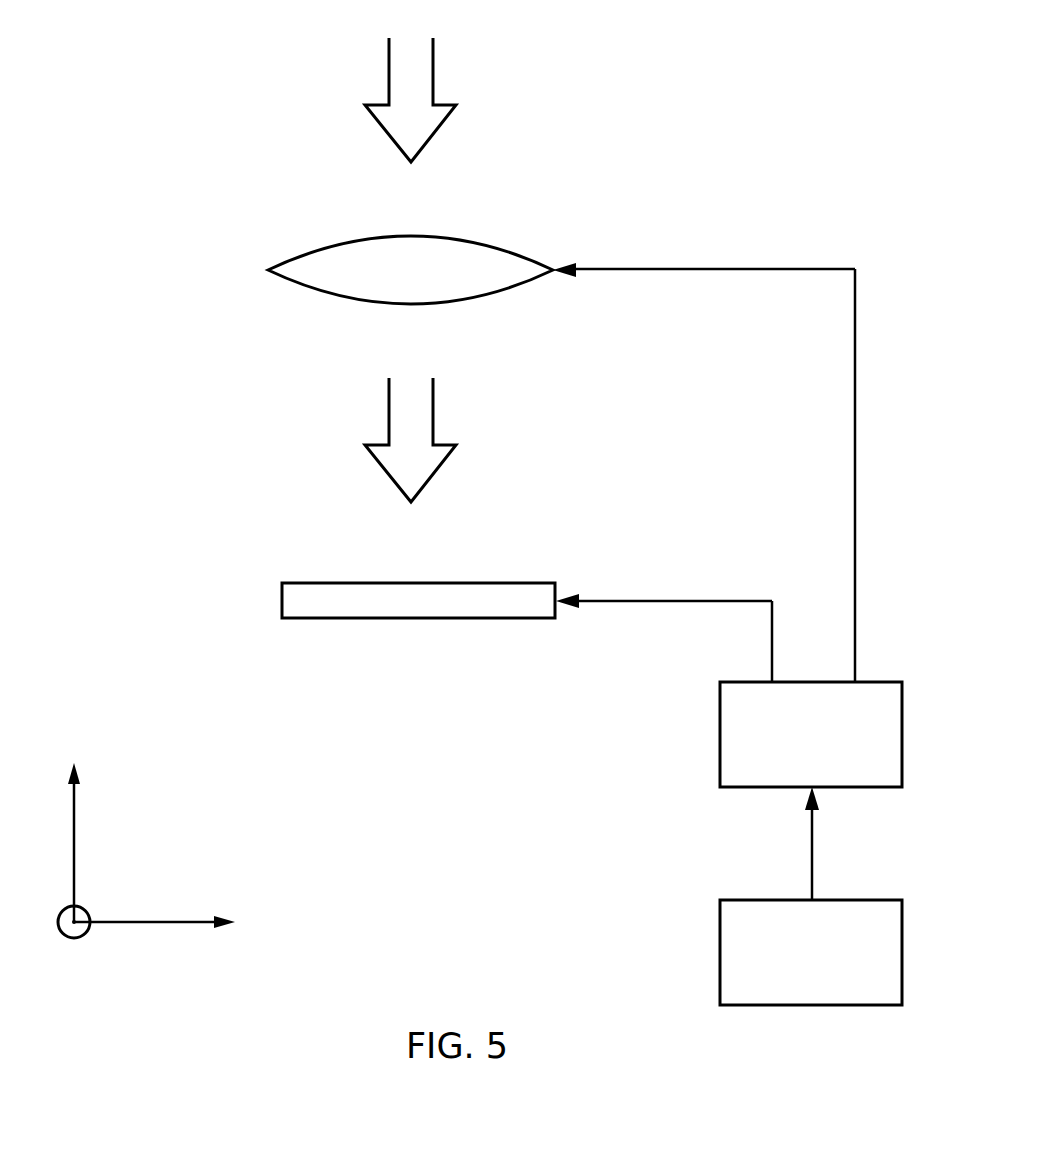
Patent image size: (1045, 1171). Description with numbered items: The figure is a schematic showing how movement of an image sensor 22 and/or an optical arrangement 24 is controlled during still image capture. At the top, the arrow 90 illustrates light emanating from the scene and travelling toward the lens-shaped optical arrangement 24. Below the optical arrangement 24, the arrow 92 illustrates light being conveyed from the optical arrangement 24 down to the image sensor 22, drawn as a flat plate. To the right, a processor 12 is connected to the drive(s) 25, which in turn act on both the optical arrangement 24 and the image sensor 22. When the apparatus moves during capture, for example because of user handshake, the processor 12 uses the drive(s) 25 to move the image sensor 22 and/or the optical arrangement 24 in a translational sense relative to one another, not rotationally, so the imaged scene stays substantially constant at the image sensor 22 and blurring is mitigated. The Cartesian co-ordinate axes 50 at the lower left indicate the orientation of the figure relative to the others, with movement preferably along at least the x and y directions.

The arrow illustrating light emanating from the scene 90 is at (433, 68).
The optical arrangement 24 is at (268, 270).
The arrow illustrating light conveyed from the optical arrangement to the image sens 92 is at (433, 408).
The image sensor 22 is at (282, 600).
The drive(s) 25 is at (720, 735).
The processor 12 is at (720, 952).
The Cartesian co-ordinate axes 50 is at (155, 865).